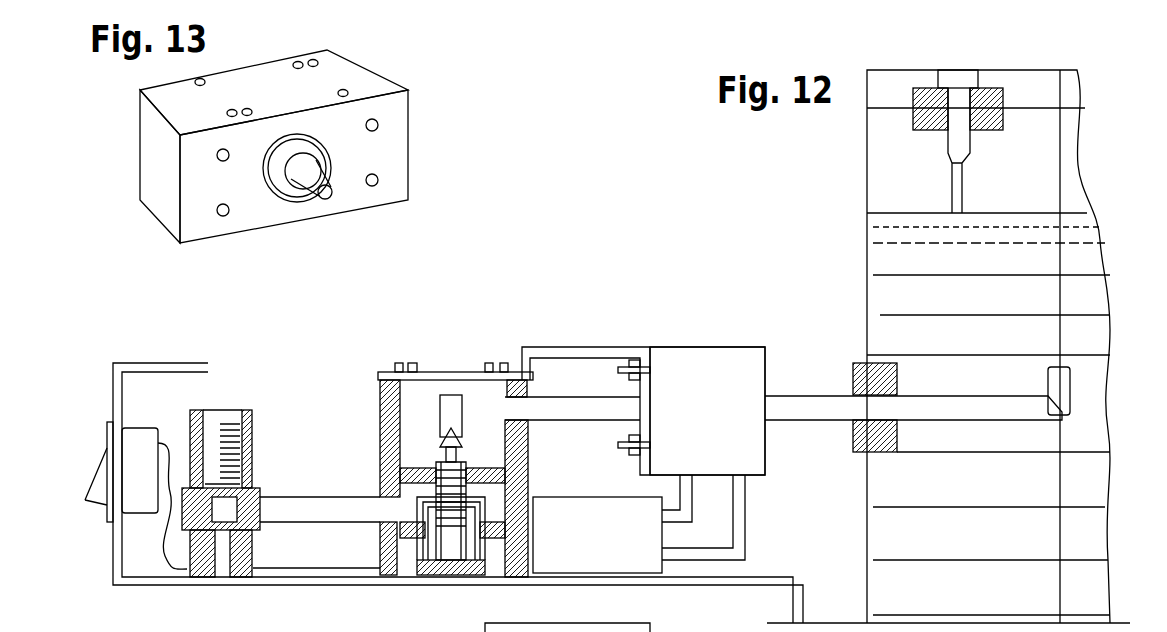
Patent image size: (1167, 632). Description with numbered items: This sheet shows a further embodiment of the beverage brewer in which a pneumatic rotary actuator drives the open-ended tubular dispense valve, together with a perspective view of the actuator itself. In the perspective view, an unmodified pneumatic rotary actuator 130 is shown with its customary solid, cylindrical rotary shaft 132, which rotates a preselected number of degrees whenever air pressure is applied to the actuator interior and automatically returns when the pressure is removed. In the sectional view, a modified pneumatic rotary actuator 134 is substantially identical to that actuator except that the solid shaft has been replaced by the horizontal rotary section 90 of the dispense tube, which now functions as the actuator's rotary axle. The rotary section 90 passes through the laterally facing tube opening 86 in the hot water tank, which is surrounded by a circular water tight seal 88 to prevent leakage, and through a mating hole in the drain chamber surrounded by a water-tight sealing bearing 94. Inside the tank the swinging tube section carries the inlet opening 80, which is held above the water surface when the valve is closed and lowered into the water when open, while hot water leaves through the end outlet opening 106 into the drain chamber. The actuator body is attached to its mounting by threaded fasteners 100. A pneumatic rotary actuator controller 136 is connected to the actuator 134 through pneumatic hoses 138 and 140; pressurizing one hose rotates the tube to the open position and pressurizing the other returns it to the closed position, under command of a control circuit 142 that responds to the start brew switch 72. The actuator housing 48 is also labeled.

In FIG. 13, the pneumatic rotary actuator 130 is at (367, 78).
In FIG. 13, the solid cylindrical rotary shaft 132 is at (332, 194).
In FIG. 12, the start brew switch 72 is at (85, 500).
In FIG. 12, the actuator housing 48 is at (422, 443).
In FIG. 12, the end outlet opening 106 is at (487, 407).
In FIG. 12, the sealing bearing 94 is at (510, 367).
In FIG. 12, the threaded fasteners 100 is at (618, 370).
In FIG. 12, the modified pneumatic rotary actuator 134 is at (690, 373).
In FIG. 12, the pneumatic rotary actuator controller 136 is at (547, 488).
In FIG. 12, the pneumatic hose 138 is at (678, 566).
In FIG. 12, the pneumatic hose 140 is at (747, 510).
In FIG. 12, the control circuit 142 is at (678, 631).
In FIG. 12, the horizontal rotary tubular section 90 is at (782, 396).
In FIG. 12, the circular water tight seal 88 is at (853, 363).
In FIG. 12, the tube opening 86 is at (856, 420).
In FIG. 12, the inlet opening 80 is at (1062, 367).